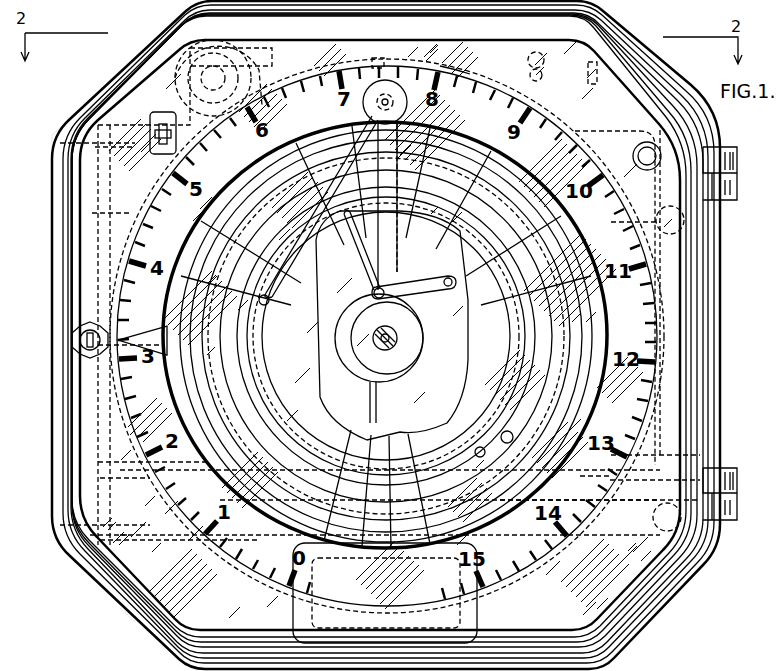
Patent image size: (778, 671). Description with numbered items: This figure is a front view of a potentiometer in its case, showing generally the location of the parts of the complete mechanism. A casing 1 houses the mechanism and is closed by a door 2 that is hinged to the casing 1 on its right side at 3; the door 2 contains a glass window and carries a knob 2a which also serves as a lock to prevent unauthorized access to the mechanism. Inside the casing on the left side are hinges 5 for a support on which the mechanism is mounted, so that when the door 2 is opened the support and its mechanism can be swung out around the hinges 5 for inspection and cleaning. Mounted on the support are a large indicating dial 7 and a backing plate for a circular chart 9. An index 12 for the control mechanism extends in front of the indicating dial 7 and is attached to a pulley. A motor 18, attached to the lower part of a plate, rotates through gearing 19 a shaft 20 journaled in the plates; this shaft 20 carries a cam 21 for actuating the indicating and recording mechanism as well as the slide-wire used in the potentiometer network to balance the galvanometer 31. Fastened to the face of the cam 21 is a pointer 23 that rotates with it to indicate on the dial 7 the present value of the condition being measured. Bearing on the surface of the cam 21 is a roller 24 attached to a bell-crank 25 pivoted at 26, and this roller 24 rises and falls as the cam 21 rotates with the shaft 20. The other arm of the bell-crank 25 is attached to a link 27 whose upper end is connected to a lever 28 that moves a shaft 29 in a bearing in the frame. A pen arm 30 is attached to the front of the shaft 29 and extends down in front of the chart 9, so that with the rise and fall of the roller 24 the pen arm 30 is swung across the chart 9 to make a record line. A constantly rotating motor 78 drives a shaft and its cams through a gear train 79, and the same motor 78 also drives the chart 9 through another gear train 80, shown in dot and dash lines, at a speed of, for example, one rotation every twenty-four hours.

The casing 1 is at (83, 97).
The door 2 is at (128, 82).
The knob 2a is at (72, 347).
The hinge 3 is at (740, 179).
The hinges 5 is at (95, 147).
The indicating dial 7 is at (452, 76).
The chart 9 is at (562, 233).
The index 12 is at (150, 327).
The motor 18 is at (612, 476).
The gearing 19 is at (402, 325).
The shaft 20 is at (400, 338).
The cam 21 is at (316, 326).
The pointer 23 is at (405, 92).
The roller 24 is at (405, 256).
The bell-crank 25 is at (424, 270).
The pivot 26 is at (457, 282).
The link 27 is at (356, 232).
The lever 28 is at (320, 72).
The shaft 29 is at (378, 60).
The pen arm 30 is at (325, 198).
The galvanometer 31 is at (92, 213).
The motor 78 is at (120, 608).
The gear train 79 is at (100, 478).
The gear train 80 is at (480, 452).